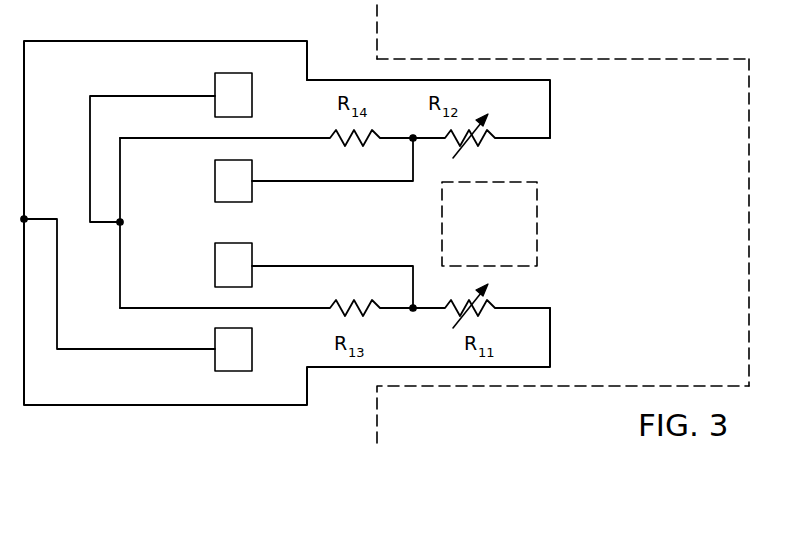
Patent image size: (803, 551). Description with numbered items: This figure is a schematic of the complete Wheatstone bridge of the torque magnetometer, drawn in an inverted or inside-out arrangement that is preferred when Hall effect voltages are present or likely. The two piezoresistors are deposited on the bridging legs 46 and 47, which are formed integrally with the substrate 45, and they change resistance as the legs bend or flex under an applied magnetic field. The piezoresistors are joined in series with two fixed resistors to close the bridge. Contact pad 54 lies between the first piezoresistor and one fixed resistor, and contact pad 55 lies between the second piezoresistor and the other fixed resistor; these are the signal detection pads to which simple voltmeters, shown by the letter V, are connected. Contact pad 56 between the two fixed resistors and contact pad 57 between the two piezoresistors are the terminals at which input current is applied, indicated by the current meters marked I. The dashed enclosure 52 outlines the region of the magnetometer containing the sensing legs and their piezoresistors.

The substrate 45 is at (368, 21).
The bridging leg 46 is at (500, 378).
The bridging leg 47 is at (486, 64).
The dashed enclosure of measuring region 52 is at (634, 47).
The contact pad 54 is at (215, 263).
The contact pad 55 is at (215, 180).
The contact pad 56 is at (215, 361).
The contact pad 57 is at (215, 87).